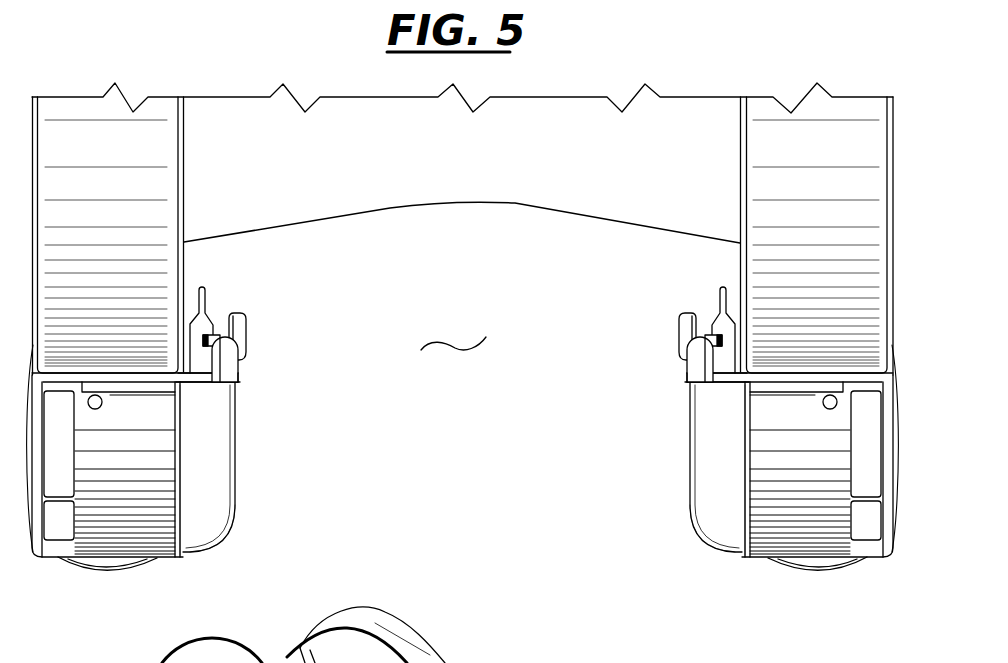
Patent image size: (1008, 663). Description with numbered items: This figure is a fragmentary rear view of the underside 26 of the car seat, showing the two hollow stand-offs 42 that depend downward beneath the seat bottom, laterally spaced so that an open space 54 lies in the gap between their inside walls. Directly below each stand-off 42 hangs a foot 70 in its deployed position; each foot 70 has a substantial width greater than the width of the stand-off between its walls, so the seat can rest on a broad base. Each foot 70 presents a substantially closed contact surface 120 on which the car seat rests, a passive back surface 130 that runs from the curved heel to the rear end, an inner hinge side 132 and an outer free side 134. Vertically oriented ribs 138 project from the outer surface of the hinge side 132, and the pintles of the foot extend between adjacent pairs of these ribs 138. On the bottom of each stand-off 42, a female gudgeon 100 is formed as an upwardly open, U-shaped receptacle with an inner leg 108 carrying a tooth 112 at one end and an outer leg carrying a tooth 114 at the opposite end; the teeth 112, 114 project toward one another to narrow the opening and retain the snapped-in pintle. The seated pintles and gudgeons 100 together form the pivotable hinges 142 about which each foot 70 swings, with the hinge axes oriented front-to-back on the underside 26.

The underside 26 is at (442, 173).
The stand-off 42 is at (107, 176).
The open space 54 is at (453, 335).
The foot 70 is at (248, 477).
The female gudgeon 100 is at (256, 337).
The inner leg 108 is at (243, 320).
The tooth 112 is at (233, 318).
The tooth 114 is at (207, 331).
The contact surface 120 is at (122, 557).
The passive back surface 130 is at (108, 445).
The inner hinge side 132 is at (185, 440).
The outer free side 134 is at (33, 485).
The rib 138 is at (203, 500).
The hinge 142 is at (265, 364).